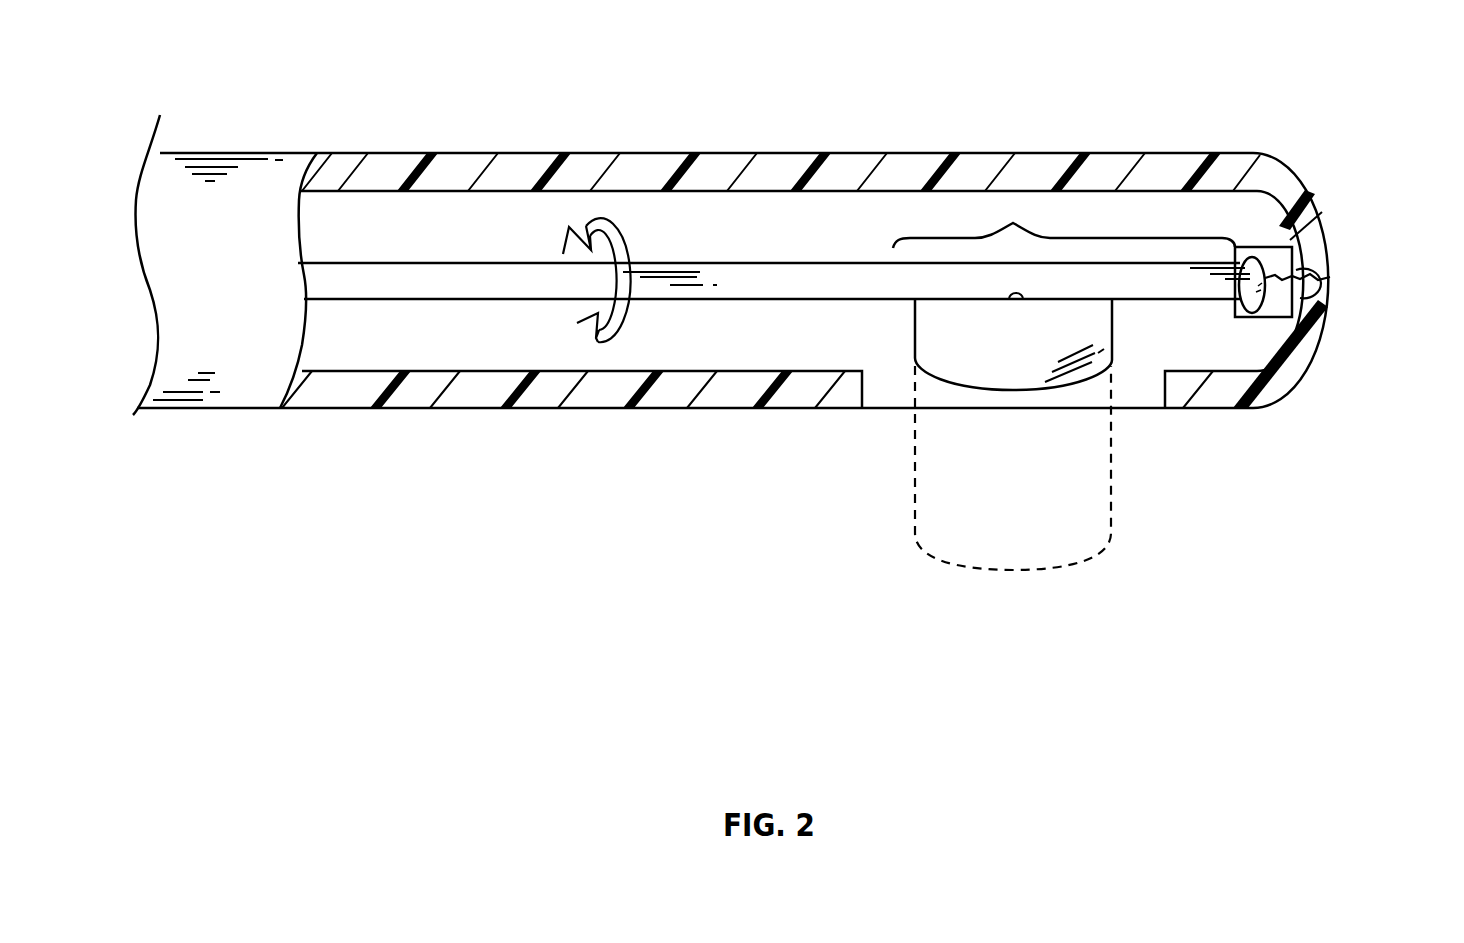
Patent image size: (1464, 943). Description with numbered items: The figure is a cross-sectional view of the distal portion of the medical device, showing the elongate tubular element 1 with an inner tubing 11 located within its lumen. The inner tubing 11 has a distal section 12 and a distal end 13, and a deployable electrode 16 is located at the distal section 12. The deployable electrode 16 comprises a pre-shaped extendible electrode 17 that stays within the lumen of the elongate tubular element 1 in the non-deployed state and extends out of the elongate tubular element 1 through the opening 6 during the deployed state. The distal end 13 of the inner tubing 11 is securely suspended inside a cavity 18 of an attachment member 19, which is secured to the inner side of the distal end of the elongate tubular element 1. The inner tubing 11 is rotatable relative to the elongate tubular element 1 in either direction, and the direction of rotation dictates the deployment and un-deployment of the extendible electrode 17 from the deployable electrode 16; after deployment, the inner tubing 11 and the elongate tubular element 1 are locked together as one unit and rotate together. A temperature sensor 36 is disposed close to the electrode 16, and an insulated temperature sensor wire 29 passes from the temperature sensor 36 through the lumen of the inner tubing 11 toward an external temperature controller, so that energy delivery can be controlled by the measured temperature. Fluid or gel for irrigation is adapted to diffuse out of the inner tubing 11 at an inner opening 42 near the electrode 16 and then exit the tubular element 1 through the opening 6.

The elongate tubular element 1 is at (465, 153).
The opening 6 is at (885, 395).
The inner tubing 11 is at (488, 285).
The distal section 12 is at (1013, 215).
The distal end 13 is at (1282, 237).
The deployable electrode 16 is at (1022, 320).
The pre-shaped extendible electrode 17 is at (925, 478).
The cavity 18 is at (1243, 320).
The attachment member 19 is at (1303, 367).
The insulated temperature sensor wire 29 is at (1327, 310).
The temperature sensor 36 is at (1335, 265).
The inner opening 42 is at (1023, 290).